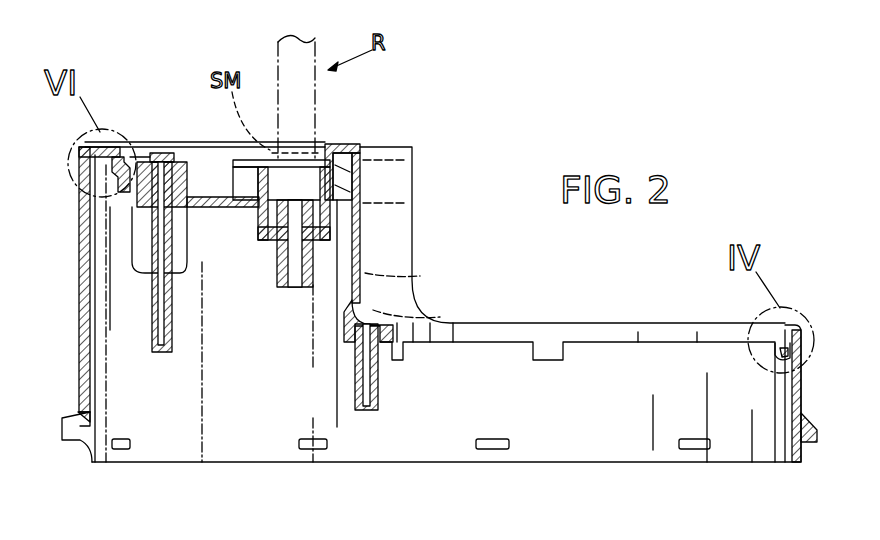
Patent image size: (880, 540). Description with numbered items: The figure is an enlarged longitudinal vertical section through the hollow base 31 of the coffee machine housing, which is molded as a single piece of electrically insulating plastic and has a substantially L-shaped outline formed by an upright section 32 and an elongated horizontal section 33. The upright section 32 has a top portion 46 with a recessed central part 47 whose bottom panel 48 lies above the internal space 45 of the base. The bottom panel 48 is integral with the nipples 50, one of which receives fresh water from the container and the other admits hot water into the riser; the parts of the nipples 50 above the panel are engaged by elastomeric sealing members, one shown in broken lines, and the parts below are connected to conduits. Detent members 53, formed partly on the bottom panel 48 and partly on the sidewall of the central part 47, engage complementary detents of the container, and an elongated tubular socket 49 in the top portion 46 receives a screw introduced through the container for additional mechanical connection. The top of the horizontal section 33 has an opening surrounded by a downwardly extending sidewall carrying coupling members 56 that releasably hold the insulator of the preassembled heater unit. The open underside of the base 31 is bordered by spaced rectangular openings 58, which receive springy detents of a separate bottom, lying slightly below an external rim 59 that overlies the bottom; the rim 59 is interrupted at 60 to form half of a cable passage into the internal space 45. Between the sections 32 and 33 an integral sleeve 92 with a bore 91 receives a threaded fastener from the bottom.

The base 31 is at (77, 240).
The upright section 32 is at (78, 276).
The horizontal section 33 is at (801, 390).
The internal space 45 is at (128, 313).
The top portion 46 is at (340, 145).
The recessed central part 47 is at (334, 184).
The bottom panel 48 is at (210, 208).
The tubular socket 49 is at (162, 156).
The nipple 50 is at (276, 272).
The detent member 53 is at (110, 181).
The coupling member 56 is at (763, 356).
The opening 58 is at (125, 450).
The external rim 59 is at (806, 423).
The interruption 60 is at (68, 443).
The bore 91 is at (367, 390).
The sleeve 92 is at (378, 382).